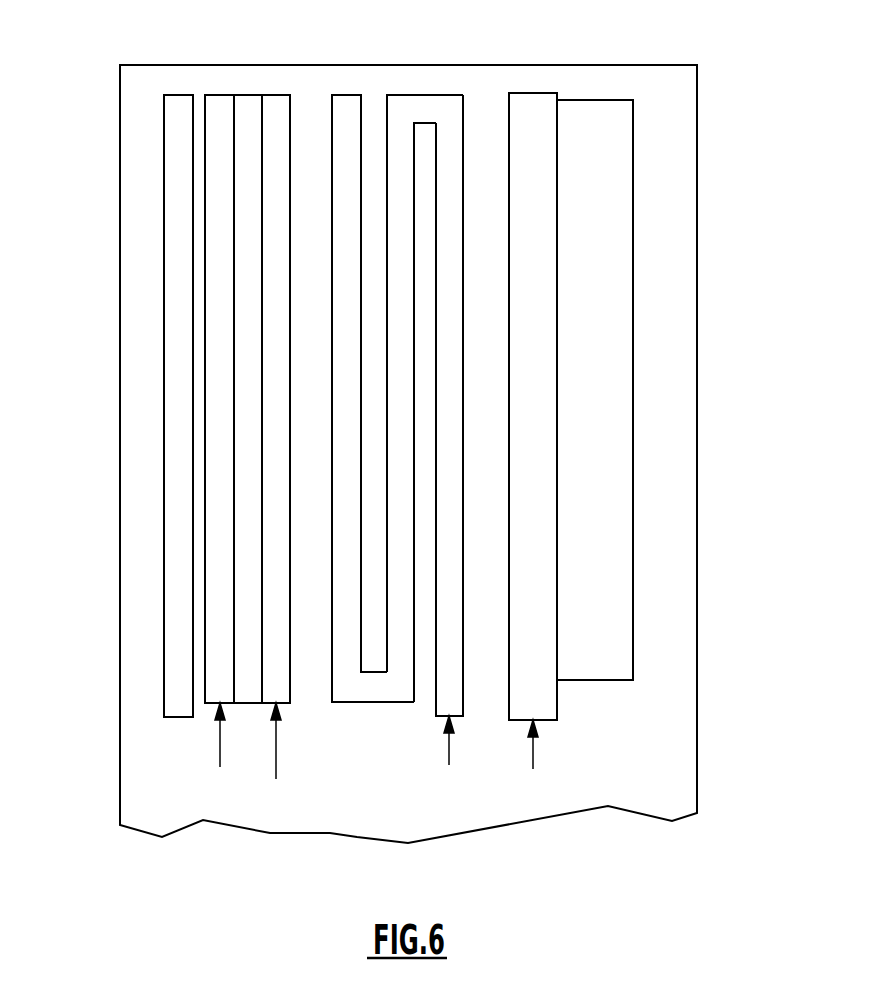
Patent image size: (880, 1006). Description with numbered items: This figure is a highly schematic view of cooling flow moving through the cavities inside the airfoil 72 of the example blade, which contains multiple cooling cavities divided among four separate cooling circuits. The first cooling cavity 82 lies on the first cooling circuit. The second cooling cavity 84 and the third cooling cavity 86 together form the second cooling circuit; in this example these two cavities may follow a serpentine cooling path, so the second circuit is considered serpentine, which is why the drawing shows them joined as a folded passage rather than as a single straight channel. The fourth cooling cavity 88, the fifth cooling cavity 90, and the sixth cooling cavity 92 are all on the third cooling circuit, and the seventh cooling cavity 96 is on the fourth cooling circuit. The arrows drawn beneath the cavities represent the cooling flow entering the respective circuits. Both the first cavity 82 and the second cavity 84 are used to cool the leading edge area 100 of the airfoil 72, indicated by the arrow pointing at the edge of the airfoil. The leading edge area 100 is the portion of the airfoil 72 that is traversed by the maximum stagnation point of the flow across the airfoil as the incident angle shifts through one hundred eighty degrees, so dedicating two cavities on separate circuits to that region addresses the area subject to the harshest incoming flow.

The airfoil 72 is at (758, 74).
The leading edge area 100 is at (100, 388).
The second cooling cavity 84 is at (180, 94).
The third cooling cavity 86 is at (217, 107).
The first cooling cavity 82 is at (274, 100).
The fourth cooling cavity 88 is at (346, 120).
The fifth cooling cavity 90 is at (402, 160).
The sixth cooling cavity 92 is at (450, 180).
The seventh cooling cavity 96 is at (529, 255).